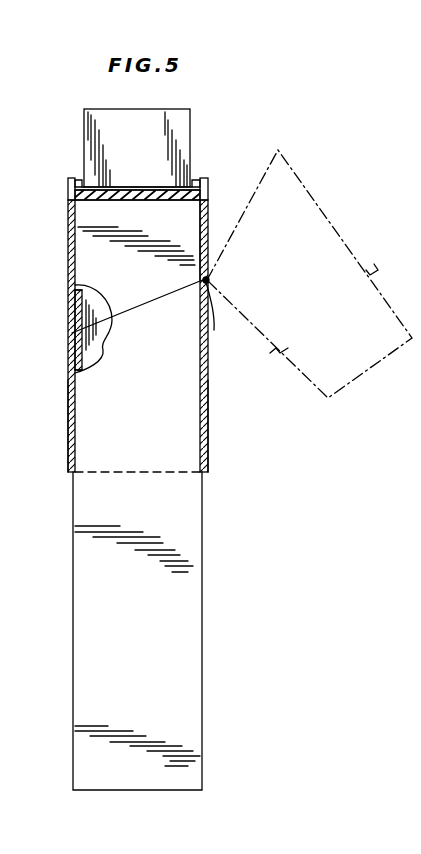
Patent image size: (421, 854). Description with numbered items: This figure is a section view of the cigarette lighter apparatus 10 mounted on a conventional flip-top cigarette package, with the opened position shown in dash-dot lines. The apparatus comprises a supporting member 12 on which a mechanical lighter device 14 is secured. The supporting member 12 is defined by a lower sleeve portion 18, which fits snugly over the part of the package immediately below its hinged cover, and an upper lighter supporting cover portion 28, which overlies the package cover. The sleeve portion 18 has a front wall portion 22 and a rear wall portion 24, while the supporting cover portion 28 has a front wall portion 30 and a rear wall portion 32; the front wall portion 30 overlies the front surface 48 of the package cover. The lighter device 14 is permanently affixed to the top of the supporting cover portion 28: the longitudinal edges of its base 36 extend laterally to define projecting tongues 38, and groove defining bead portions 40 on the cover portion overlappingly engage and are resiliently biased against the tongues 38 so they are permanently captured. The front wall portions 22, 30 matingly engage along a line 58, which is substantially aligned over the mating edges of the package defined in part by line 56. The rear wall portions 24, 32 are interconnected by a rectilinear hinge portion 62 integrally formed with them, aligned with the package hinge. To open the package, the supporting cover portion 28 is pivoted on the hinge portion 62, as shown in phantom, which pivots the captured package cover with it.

The cigarette lighter apparatus 10 is at (66, 238).
The supporting member 12 is at (2, 373).
The mechanical lighter device 14 is at (183, 116).
The lower sleeve portion 18 is at (209, 449).
The front wall portion 22 is at (68, 418).
The rear wall portion 24 is at (208, 420).
The lighter supporting cover portion 28 is at (68, 278).
The front wall portion 30 is at (75, 303).
The rear wall portion 32 is at (208, 228).
The base 36 is at (148, 186).
The projecting tongues 38 is at (70, 188).
The groove defining bead portions 40 is at (75, 180).
The front surface 48 is at (80, 314).
The line 56 is at (137, 309).
The line 58 is at (78, 332).
The hinge portion 62 is at (209, 284).